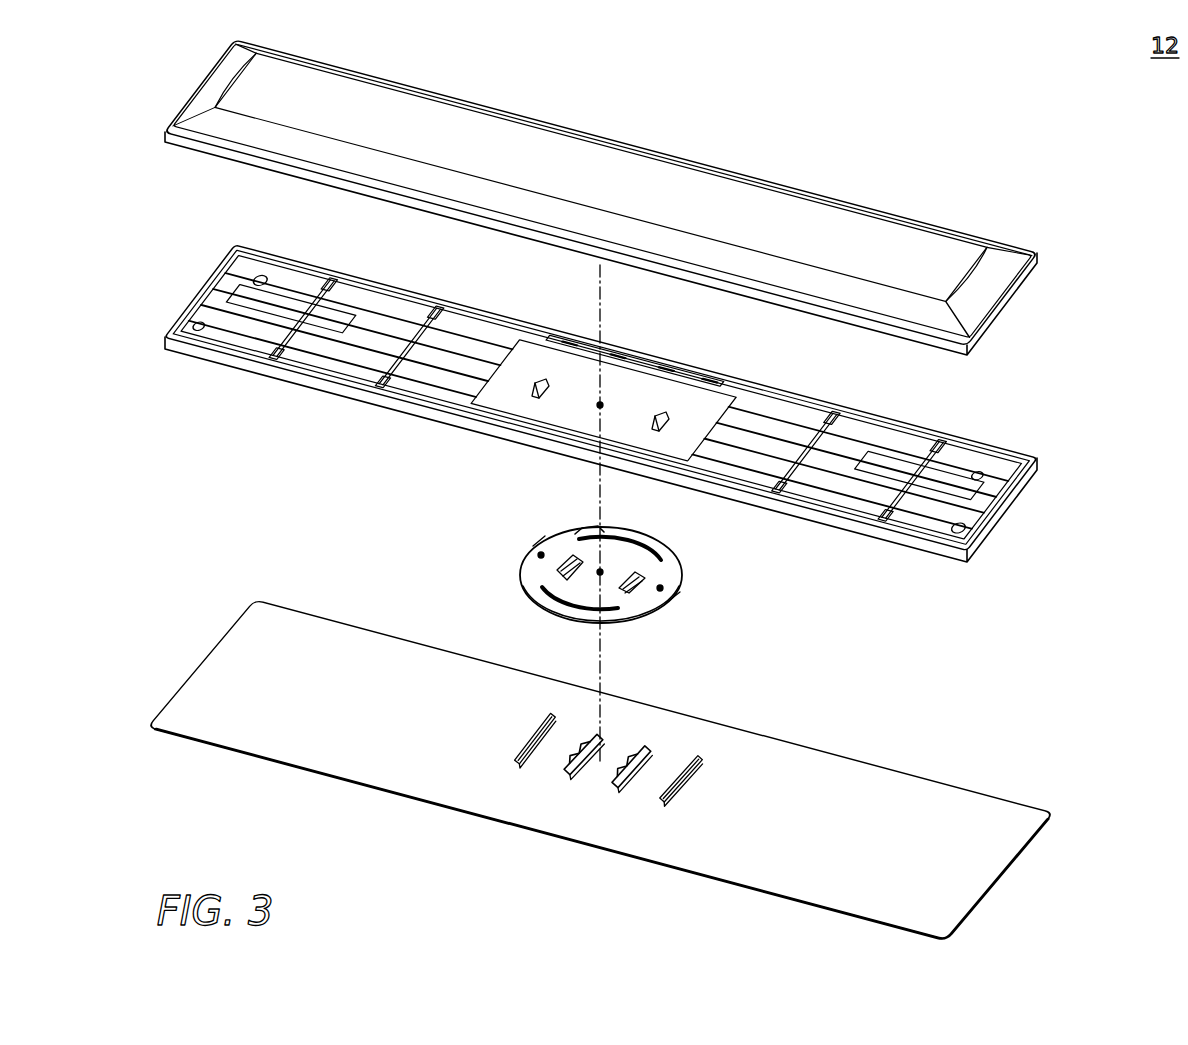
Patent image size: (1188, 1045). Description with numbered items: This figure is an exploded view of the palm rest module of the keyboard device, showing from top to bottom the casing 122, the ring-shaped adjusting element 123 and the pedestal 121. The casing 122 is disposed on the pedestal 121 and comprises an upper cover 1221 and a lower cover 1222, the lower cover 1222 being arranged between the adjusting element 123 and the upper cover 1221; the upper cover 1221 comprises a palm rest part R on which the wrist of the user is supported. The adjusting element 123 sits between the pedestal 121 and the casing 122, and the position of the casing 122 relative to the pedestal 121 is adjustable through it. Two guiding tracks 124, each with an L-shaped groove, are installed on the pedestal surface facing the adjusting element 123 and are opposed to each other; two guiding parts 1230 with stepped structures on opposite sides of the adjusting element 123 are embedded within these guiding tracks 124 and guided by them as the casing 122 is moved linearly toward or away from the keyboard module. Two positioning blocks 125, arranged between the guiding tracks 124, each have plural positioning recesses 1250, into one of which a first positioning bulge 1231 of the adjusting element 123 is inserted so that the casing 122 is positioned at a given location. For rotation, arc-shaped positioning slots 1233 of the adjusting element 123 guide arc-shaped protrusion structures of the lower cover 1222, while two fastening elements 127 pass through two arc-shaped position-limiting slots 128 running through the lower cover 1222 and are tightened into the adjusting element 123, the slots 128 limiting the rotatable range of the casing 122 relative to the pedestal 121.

The palm rest part R is at (764, 200).
The pedestal 121 is at (955, 803).
The casing 122 is at (1128, 340).
The upper cover 1221 is at (995, 322).
The lower cover 1222 is at (1008, 478).
The adjusting element 123 is at (672, 565).
The guiding part 1230 is at (670, 602).
The first positioning bulge 1231 is at (560, 567).
The arc-shaped positioning slot 1233 is at (585, 518).
The guiding track 124 is at (517, 760).
The positioning block 125 is at (567, 770).
The positioning recess 1250 is at (579, 734).
The fastening element 127 is at (537, 555).
The arc-shaped position-limiting slot 128 is at (540, 376).